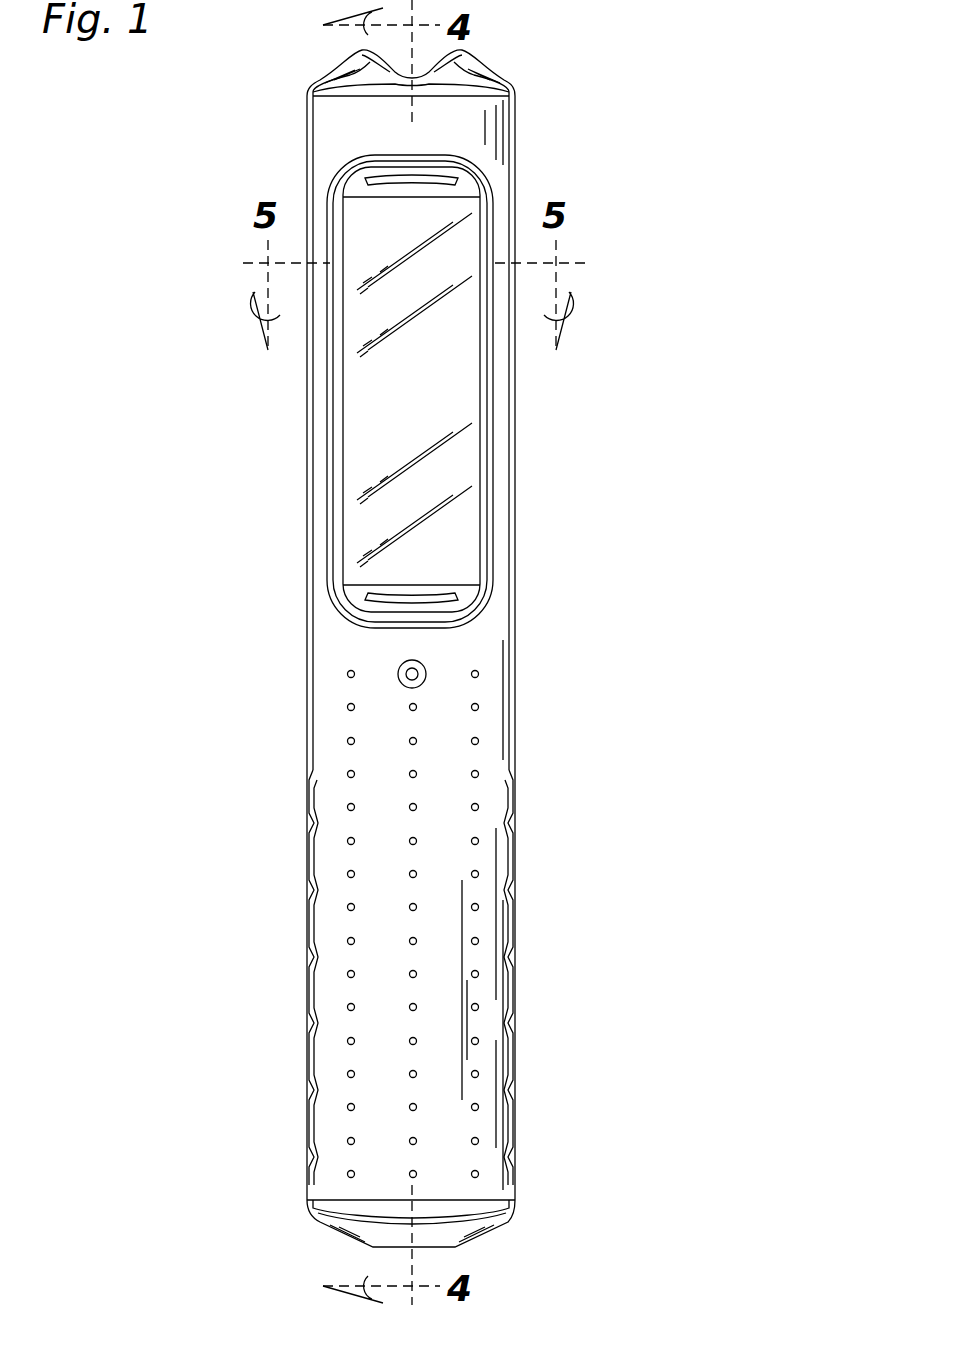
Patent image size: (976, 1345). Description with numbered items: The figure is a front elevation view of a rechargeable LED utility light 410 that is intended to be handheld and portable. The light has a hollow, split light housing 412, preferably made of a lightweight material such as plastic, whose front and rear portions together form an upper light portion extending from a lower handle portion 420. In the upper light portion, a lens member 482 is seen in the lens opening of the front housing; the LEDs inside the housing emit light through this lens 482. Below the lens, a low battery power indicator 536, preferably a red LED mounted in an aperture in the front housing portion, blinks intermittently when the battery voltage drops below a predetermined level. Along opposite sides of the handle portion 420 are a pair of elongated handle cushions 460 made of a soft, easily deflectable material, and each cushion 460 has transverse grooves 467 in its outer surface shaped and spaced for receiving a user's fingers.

The rechargeable LED utility light 410 is at (558, 133).
The light housing 412 is at (517, 578).
The lens member 482 is at (432, 404).
The low battery power indicator 536 is at (422, 668).
The handle cushion 460 is at (517, 790).
The transverse grooves 467 is at (512, 830).
The lower handle portion 420 is at (517, 1181).